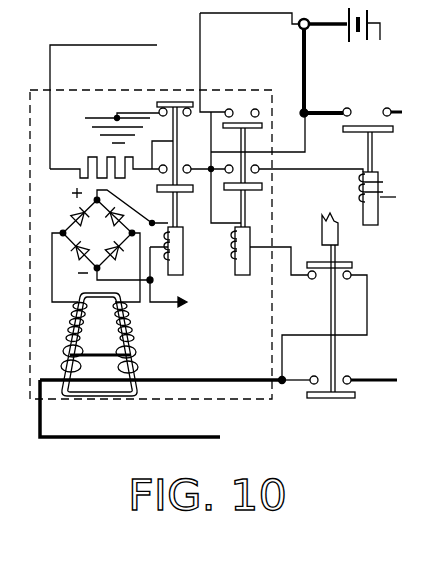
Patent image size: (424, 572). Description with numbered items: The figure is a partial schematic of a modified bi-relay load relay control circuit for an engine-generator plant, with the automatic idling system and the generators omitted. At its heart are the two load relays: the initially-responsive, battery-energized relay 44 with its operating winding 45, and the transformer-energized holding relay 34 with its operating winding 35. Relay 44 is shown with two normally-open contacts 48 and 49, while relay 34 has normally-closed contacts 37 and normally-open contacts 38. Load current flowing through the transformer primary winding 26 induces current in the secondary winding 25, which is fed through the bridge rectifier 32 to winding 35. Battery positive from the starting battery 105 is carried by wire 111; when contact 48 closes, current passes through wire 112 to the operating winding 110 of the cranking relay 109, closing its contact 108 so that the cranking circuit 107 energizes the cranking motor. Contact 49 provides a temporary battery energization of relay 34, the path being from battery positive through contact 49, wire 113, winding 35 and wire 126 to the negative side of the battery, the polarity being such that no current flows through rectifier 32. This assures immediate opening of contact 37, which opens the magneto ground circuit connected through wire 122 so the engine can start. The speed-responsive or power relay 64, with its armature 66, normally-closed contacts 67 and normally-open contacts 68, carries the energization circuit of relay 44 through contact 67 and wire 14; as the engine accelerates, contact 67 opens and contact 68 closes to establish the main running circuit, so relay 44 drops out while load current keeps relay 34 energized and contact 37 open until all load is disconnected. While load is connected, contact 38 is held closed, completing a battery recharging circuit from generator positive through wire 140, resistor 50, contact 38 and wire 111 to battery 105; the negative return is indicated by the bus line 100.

The wire to relay 14 is at (368, 326).
The secondary winding 25 is at (128, 326).
The primary winding 26 is at (135, 367).
The rectifier 32 is at (68, 229).
The holding relay 34 is at (215, 252).
The operating winding 35 is at (181, 228).
The normally-closed contacts 37 is at (180, 101).
The normally-open contacts 38 is at (167, 193).
The initially-responsive relay 44 is at (270, 273).
The operating winding 45 is at (250, 229).
The normally-open contacts 48 is at (232, 191).
The normally-open contact 49 is at (243, 123).
The resistor 50 is at (97, 150).
The speed-responsive relay 64 is at (317, 247).
The armature 66 is at (336, 241).
The normally-closed contacts 67 is at (338, 285).
The normally-open contacts 68 is at (320, 399).
The negative bus line 100 is at (241, 378).
The starting battery 105 is at (380, 40).
The cranking circuit 107 is at (308, 78).
The contact 108 is at (366, 126).
The cranking relay 109 is at (353, 197).
The operating winding 110 is at (380, 177).
The wire 111 is at (306, 140).
The wire 112 is at (300, 171).
The wire 113 is at (190, 144).
The wire 122 is at (199, 24).
The wire 126 is at (168, 304).
The wire 140 is at (97, 45).